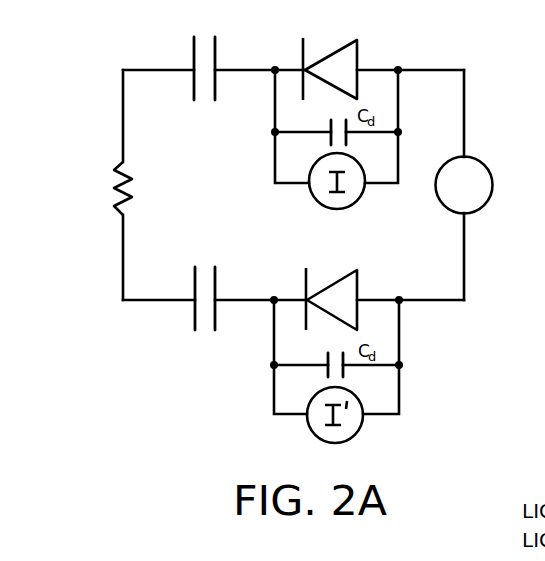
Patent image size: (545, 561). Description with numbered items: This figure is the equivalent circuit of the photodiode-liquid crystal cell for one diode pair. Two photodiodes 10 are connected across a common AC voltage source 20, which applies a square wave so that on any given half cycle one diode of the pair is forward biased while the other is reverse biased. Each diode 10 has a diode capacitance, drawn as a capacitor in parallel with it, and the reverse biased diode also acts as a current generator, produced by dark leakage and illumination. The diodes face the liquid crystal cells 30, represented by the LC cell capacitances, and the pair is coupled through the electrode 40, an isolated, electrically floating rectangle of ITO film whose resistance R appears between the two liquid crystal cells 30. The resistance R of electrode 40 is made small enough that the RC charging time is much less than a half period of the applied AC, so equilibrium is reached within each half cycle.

The photodiode 10 is at (358, 56).
The voltage source 20 is at (493, 179).
The liquid crystal cell 30 is at (216, 215).
The electrode 40 is at (76, 205).